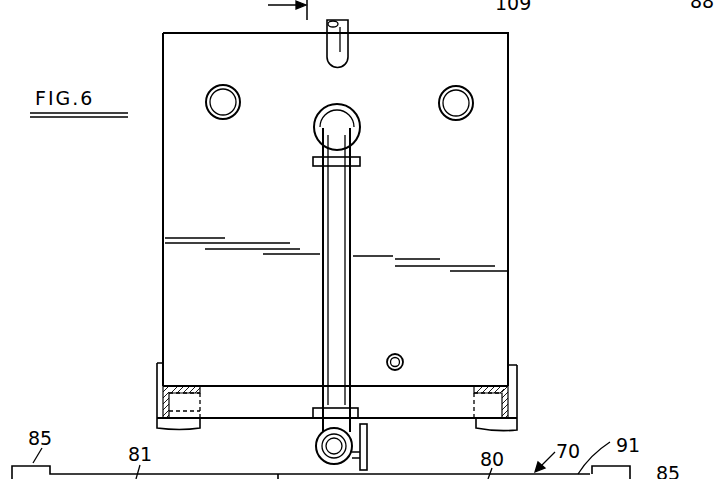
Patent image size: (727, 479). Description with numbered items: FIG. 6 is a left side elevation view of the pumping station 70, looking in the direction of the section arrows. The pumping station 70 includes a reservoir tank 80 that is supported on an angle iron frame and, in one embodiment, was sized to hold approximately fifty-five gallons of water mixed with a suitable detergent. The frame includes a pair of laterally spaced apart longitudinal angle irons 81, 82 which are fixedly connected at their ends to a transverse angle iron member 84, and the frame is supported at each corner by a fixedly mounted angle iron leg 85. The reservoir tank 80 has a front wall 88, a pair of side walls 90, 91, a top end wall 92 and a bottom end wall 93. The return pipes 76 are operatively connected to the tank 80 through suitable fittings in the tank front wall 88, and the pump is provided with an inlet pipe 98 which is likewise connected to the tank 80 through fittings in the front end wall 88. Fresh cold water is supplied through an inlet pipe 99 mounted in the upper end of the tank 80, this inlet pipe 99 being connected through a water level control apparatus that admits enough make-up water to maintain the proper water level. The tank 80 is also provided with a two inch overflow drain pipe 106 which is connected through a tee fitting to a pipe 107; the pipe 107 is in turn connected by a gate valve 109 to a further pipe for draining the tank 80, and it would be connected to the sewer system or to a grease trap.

The pumping station 70 is at (513, 170).
The return pipes 76 is at (224, 119).
The reservoir tank 80 is at (487, 247).
The longitudinal angle iron 81 is at (170, 403).
The longitudinal angle iron 82 is at (500, 400).
The transverse angle iron member 84 is at (395, 400).
The angle iron leg 85 is at (156, 392).
The front wall 88 is at (493, 221).
The side wall 90 is at (510, 343).
The side wall 91 is at (163, 325).
The top end wall 92 is at (457, 32).
The bottom end wall 93 is at (295, 386).
The inlet pipe 98 is at (403, 359).
The inlet pipe 99 is at (338, 50).
The overflow drain pipe 106 is at (340, 227).
The pipe 107 is at (316, 448).
The gate valve 109 is at (367, 447).